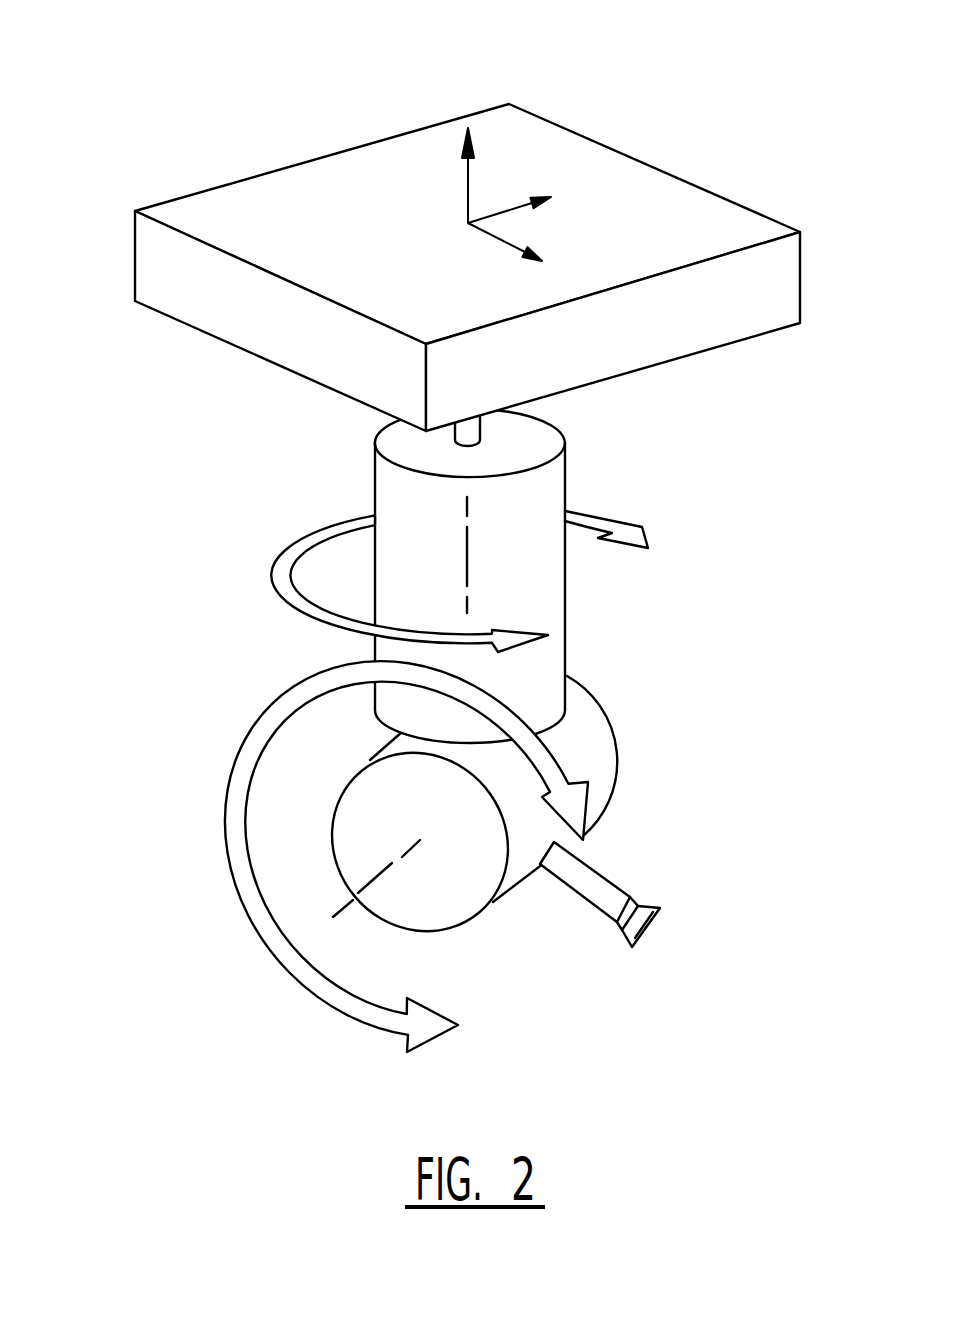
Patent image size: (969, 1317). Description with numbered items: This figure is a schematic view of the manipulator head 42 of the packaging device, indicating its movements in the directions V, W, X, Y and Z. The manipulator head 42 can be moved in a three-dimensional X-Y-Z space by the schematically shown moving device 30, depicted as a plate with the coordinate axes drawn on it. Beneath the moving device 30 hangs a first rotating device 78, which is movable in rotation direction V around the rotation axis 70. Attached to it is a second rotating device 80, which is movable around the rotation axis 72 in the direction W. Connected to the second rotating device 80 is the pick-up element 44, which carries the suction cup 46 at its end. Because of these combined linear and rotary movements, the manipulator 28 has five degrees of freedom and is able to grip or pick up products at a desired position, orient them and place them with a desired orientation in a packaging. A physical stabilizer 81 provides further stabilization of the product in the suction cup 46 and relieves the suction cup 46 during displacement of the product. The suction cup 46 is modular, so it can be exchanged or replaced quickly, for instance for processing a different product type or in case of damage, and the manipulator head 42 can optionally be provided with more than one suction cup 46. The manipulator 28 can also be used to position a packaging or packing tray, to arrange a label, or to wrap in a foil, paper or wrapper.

The manipulator 28 is at (411, 544).
The moving device 30 is at (675, 211).
The manipulator head 42 is at (408, 740).
The pick-up element 44 is at (593, 887).
The suction cup 46 is at (653, 923).
The rotation axis 70 is at (465, 527).
The rotation axis 72 is at (388, 870).
The first rotating device 78 is at (533, 578).
The second rotating device 80 is at (598, 739).
The physical stabilizer 81 is at (672, 872).